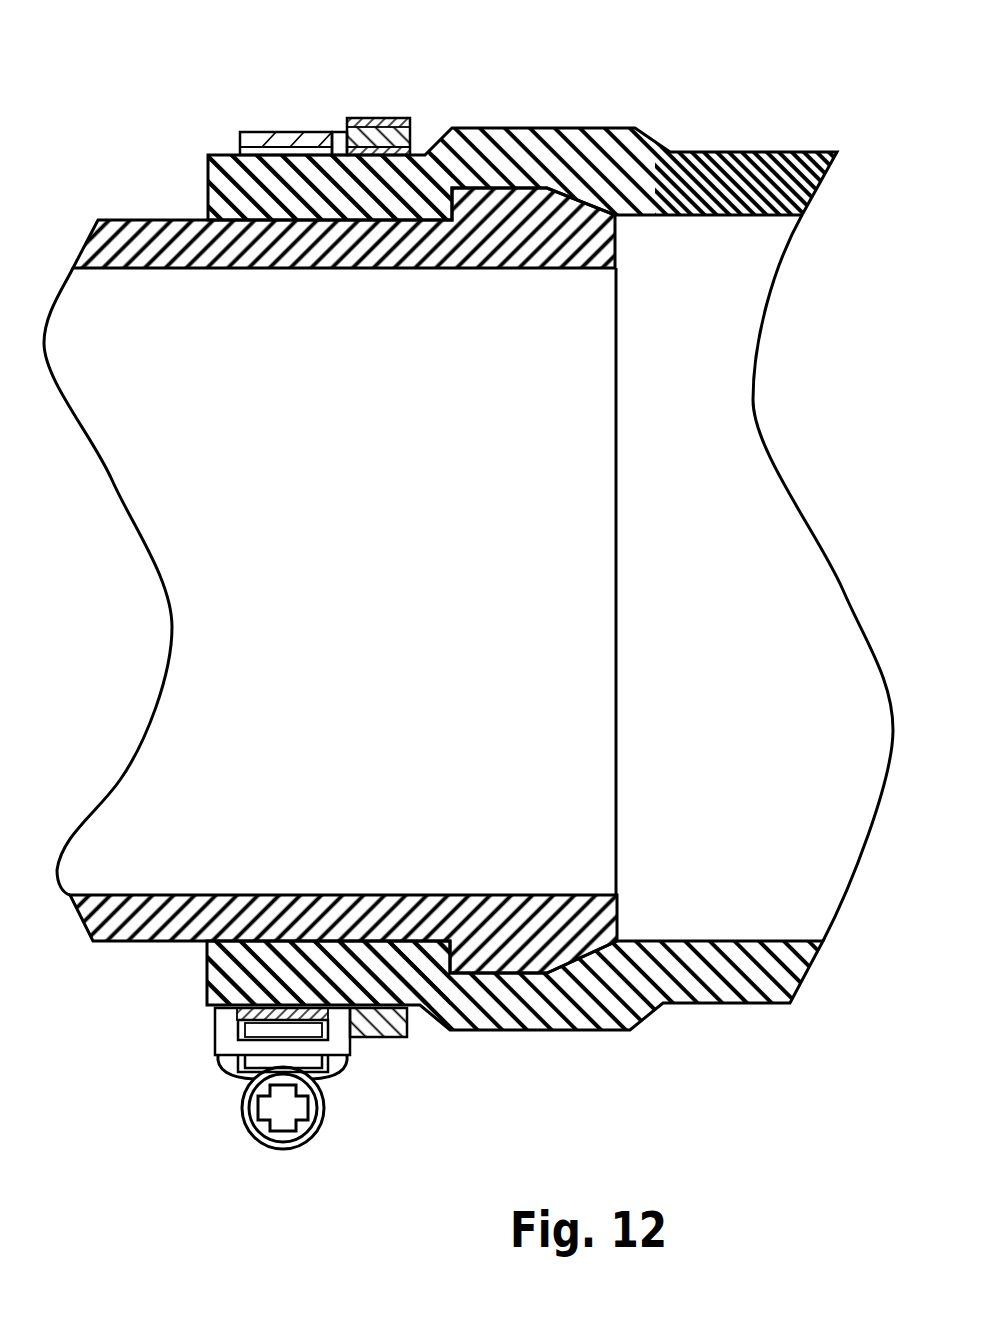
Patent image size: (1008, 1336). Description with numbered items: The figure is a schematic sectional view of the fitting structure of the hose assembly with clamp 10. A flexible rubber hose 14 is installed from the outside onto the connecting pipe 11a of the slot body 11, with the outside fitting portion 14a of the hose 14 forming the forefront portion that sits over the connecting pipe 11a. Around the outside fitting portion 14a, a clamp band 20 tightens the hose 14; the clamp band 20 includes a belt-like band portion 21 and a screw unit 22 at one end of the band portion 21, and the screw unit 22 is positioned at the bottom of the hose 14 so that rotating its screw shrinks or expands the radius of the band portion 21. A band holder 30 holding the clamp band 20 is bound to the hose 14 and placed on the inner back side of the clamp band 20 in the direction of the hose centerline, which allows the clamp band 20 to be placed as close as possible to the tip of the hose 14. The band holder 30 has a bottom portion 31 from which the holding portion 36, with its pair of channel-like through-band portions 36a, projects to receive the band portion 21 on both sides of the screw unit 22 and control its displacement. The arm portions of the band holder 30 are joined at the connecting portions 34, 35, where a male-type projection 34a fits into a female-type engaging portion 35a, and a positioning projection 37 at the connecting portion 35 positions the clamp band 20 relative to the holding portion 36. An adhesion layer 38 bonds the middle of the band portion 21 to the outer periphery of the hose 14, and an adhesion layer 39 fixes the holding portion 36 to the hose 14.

The hose assembly with clamp 10 is at (707, 125).
The slot body 11 is at (506, 581).
The connecting pipe 11a is at (355, 262).
The flexible rubber hose 14 is at (773, 158).
The outside fitting portion 14a is at (223, 192).
The clamp band 20 is at (301, 124).
The band portion 21 is at (252, 132).
The screw unit 22 is at (309, 1145).
The band holder 30 is at (404, 104).
The bottom portion 31 is at (380, 1040).
The connecting portion 34 is at (473, 106).
The male-type projection 34a is at (404, 135).
The connecting portion 35 is at (384, 84).
The female-type engaging portion 35a is at (372, 118).
The holding portion 36 is at (215, 1060).
The through-band portion 36a is at (208, 1044).
The positioning projection 37 is at (343, 132).
The adhesion layer 38 is at (240, 152).
The adhesion layer 39 is at (213, 1013).